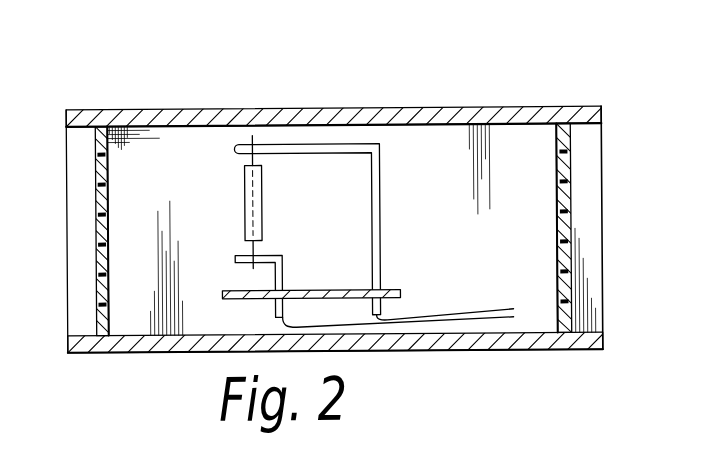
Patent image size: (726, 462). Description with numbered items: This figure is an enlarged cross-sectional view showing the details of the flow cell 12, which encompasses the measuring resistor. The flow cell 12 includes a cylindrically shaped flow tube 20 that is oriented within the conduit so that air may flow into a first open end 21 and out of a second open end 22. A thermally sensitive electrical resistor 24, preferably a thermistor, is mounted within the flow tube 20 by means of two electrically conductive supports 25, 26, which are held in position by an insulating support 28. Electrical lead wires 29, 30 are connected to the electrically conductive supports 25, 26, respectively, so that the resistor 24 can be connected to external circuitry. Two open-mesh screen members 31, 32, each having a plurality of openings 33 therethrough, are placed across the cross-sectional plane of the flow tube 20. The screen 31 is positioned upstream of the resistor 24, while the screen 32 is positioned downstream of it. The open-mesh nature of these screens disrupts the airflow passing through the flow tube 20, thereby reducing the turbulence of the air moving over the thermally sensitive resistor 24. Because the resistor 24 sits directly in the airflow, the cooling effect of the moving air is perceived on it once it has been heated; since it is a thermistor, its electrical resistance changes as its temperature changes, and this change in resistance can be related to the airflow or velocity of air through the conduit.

The flow cell 12 is at (318, 91).
The flow tube 20 is at (510, 108).
The first open end 21 is at (602, 160).
The second open end 22 is at (67, 157).
The thermally sensitive electrical resistor 24 is at (262, 208).
The electrically conductive support 25 is at (275, 306).
The electrically conductive support 26 is at (380, 186).
The insulating support 28 is at (392, 290).
The electrical lead wire 29 is at (487, 335).
The electrical lead wire 30 is at (466, 315).
The screen member 31 is at (569, 286).
The screen member 32 is at (96, 292).
The openings 33 is at (96, 218).